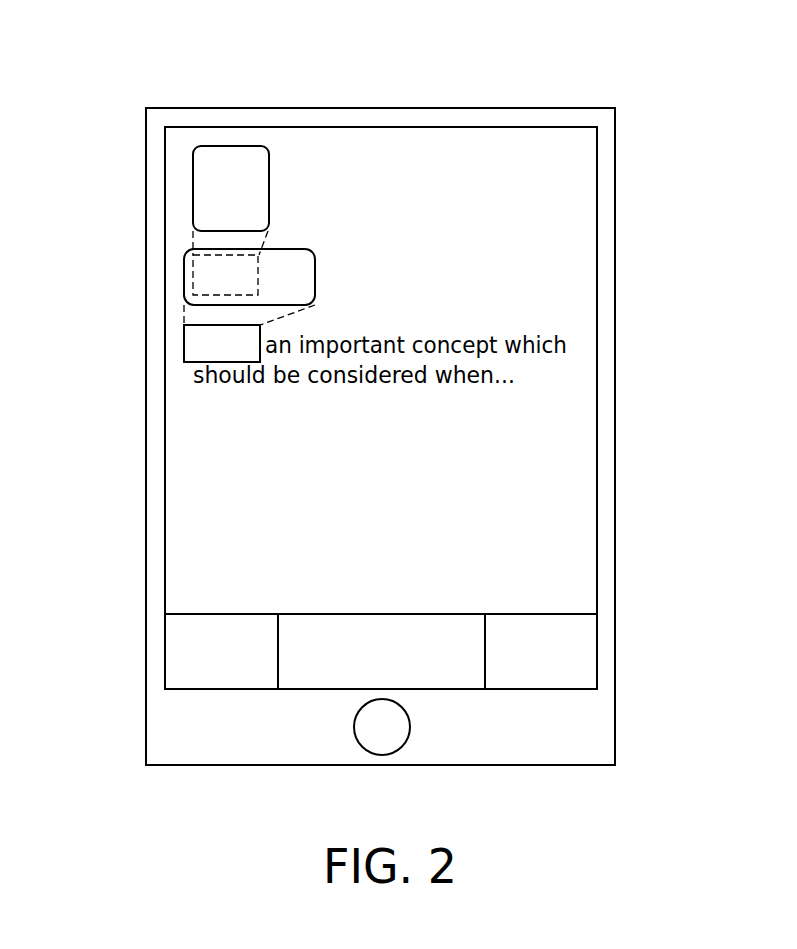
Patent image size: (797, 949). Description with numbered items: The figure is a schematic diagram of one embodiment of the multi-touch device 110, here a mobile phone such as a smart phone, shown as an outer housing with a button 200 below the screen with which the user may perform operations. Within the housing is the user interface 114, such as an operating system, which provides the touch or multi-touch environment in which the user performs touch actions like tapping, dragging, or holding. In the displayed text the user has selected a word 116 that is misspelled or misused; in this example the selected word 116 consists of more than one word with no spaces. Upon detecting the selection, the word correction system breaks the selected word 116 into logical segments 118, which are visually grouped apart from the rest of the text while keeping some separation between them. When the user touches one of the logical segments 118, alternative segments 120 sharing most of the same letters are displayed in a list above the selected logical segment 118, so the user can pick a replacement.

The multi-touch device 110 is at (281, 108).
The user interface 114 is at (598, 182).
The word 116 is at (184, 335).
The logical segments 118 is at (184, 275).
The alternative segments 120 is at (193, 200).
The buttons 200 is at (354, 727).